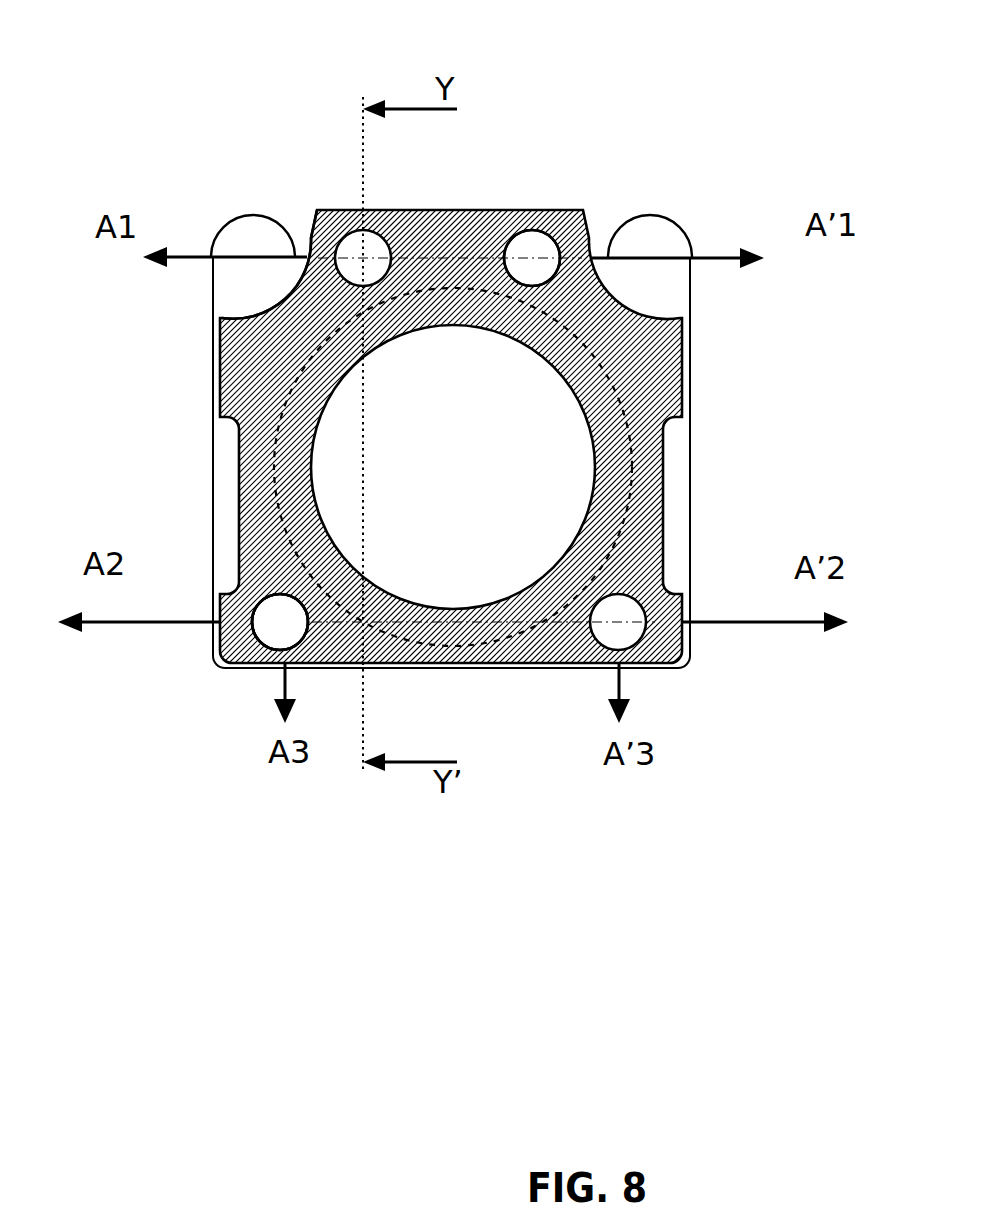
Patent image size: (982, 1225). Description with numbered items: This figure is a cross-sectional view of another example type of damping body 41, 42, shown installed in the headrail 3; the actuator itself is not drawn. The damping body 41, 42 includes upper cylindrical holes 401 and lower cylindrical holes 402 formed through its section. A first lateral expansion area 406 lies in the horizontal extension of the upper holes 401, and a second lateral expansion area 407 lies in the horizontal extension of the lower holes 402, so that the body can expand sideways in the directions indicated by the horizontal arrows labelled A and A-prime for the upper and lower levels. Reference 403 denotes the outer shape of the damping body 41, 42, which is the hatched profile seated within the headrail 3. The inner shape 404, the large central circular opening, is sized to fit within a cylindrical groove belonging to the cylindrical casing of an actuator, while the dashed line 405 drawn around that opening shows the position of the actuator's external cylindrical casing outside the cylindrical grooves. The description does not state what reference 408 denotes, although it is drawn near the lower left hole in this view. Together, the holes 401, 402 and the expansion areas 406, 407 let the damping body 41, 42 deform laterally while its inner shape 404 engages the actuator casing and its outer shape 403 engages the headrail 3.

The headrail 3 is at (691, 452).
The damping body 41 is at (491, 355).
The damping body 42 is at (314, 150).
The upper cylindrical holes 401 is at (517, 240).
The lower cylindrical holes 402 is at (605, 620).
The outer shape 403 is at (532, 248).
The inner shape 404 is at (347, 373).
The dashed line 405 is at (607, 375).
The first lateral expansion area 406 is at (320, 257).
The second lateral expansion area 407 is at (250, 622).
The bottom surface 408 is at (283, 655).